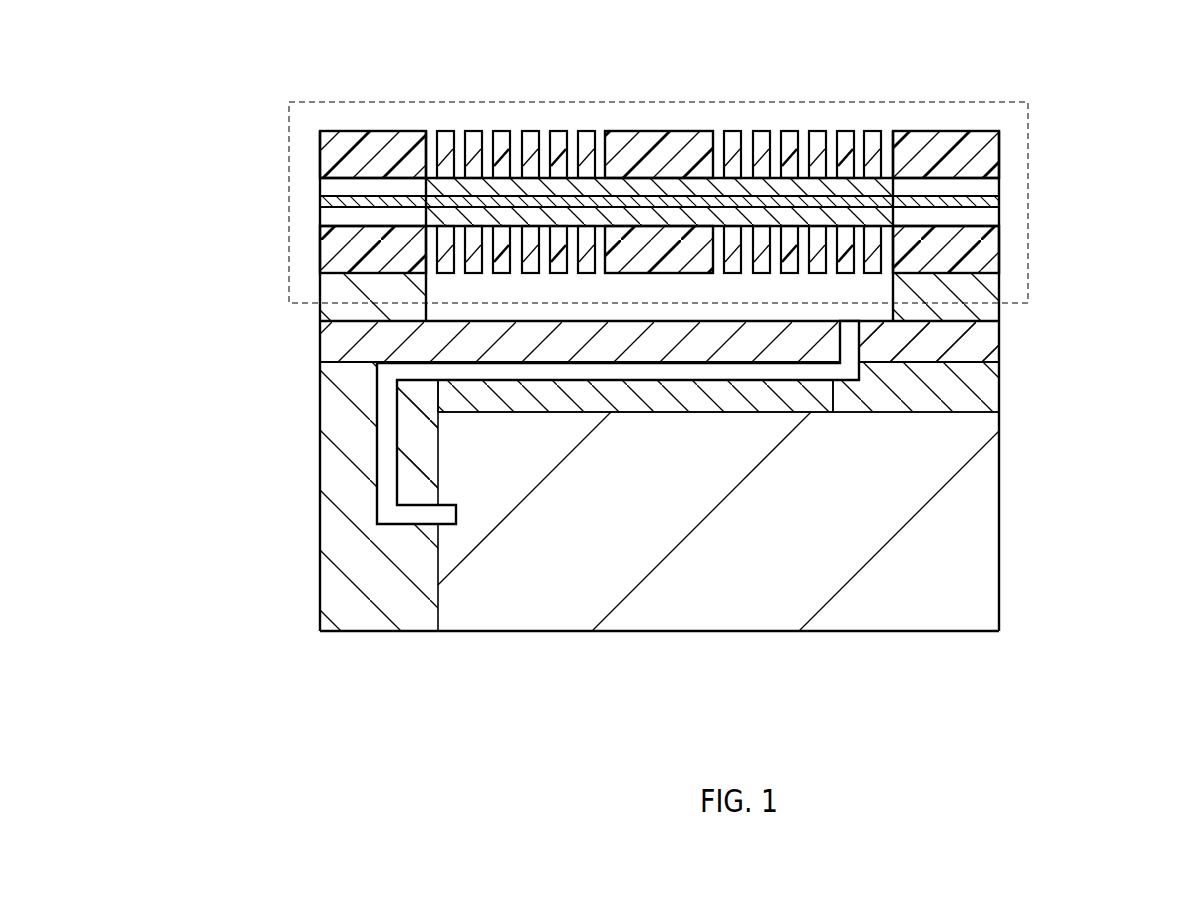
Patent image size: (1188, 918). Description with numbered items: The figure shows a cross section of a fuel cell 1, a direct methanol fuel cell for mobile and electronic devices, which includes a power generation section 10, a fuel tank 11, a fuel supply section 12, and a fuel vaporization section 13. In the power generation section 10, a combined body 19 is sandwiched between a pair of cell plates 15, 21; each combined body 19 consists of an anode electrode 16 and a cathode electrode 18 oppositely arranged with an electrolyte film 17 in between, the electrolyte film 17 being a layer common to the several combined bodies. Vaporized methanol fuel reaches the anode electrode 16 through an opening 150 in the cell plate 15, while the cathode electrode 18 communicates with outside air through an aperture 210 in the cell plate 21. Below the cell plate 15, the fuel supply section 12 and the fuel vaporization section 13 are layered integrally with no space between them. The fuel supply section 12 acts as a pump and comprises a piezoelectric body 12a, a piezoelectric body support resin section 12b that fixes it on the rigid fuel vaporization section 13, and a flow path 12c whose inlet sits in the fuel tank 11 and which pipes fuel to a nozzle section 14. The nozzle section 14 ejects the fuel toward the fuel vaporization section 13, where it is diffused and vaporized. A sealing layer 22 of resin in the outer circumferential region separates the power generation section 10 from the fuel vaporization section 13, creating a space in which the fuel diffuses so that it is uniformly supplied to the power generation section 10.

The fuel cell 1 is at (1012, 693).
The power generation section 10 is at (655, 100).
The fuel tank 11 is at (983, 512).
The fuel supply section 12 is at (1110, 375).
The piezoelectric body 12a is at (830, 405).
The piezoelectric body support resin section 12b is at (985, 385).
The flow path 12c is at (393, 440).
The fuel vaporization section 13 is at (335, 329).
The nozzle section 14 is at (1000, 338).
The cell plate 15 is at (960, 262).
The anode electrode 16 is at (450, 216).
The electrolyte film 17 is at (960, 203).
The cathode electrode 18 is at (440, 187).
The combined body 19 is at (1093, 180).
The cell plate 21 is at (338, 153).
The sealing layer 22 is at (335, 289).
The opening 150 is at (392, 389).
The aperture 210 is at (803, 130).